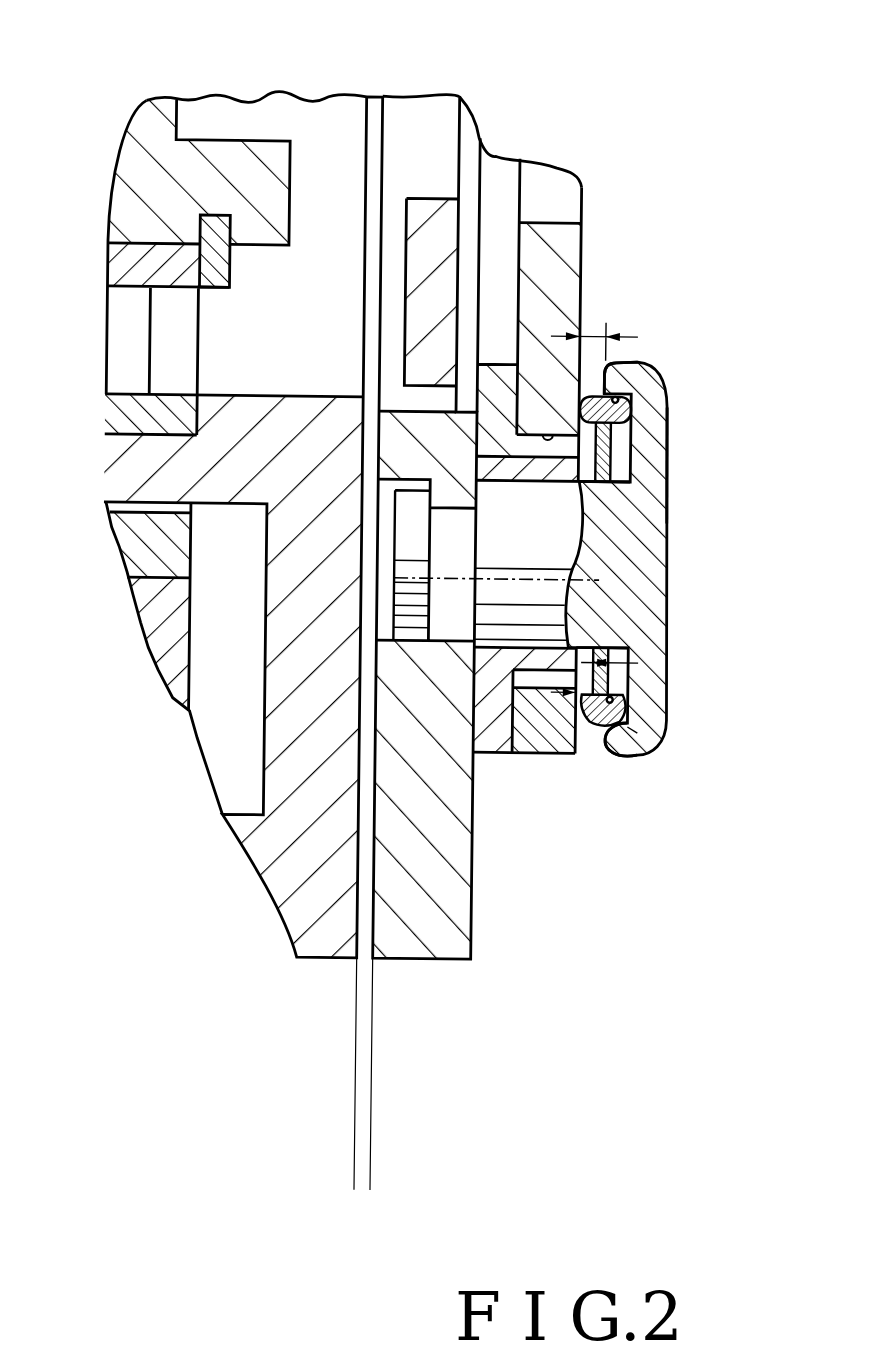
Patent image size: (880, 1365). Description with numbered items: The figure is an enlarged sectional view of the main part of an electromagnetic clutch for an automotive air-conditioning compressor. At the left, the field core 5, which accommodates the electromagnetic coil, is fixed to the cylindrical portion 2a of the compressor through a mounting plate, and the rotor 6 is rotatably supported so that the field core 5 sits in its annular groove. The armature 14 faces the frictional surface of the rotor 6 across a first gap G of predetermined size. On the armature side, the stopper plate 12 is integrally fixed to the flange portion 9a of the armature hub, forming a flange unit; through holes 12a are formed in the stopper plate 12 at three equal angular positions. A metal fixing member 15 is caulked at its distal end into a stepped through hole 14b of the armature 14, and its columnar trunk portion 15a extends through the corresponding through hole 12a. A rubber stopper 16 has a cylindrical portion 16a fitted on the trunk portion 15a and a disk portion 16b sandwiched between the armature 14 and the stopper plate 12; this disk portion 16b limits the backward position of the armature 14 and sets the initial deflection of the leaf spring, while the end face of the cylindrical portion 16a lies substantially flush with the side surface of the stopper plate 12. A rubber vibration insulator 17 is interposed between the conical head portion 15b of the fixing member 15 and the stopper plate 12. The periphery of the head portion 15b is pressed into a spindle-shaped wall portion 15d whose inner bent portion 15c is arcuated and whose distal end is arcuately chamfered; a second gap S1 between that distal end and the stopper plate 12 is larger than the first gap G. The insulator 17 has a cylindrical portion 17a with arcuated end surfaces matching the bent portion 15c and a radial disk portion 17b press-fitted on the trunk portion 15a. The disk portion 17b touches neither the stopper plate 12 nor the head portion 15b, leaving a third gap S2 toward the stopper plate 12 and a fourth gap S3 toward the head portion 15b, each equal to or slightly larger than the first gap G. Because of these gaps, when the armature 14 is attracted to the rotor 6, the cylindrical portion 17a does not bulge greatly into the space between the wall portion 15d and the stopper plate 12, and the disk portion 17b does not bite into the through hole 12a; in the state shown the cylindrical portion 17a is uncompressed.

The cylindrical portion 2a is at (148, 170).
The field core 5 is at (143, 552).
The rotor 6 is at (327, 949).
The flange portion 9a is at (438, 222).
The stopper plate 12 is at (574, 244).
The through hole 12a is at (548, 430).
The armature 14 is at (422, 949).
The stepped through hole 14b is at (400, 640).
The fixing member 15 is at (690, 521).
The trunk portion 15a is at (592, 580).
The head portion 15b is at (668, 403).
The bent portion 15c is at (630, 362).
The wall portion 15d is at (644, 758).
The rubber stopper 16 is at (500, 350).
The cylindrical portion 16a is at (534, 665).
The disk portion 16b is at (488, 758).
The rubber vibration insulator 17 is at (606, 456).
The cylindrical portion 17a is at (594, 735).
The disk portion 17b is at (612, 656).
The second gap S1 is at (620, 335).
The third gap S2 is at (645, 737).
The fourth gap S3 is at (642, 667).
The first gap G is at (312, 1165).